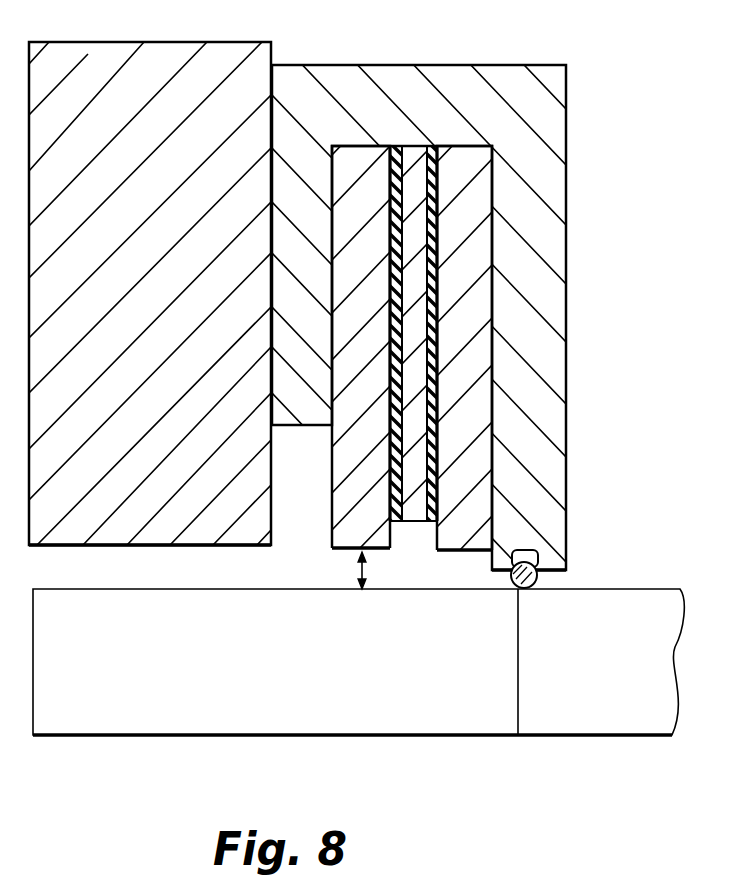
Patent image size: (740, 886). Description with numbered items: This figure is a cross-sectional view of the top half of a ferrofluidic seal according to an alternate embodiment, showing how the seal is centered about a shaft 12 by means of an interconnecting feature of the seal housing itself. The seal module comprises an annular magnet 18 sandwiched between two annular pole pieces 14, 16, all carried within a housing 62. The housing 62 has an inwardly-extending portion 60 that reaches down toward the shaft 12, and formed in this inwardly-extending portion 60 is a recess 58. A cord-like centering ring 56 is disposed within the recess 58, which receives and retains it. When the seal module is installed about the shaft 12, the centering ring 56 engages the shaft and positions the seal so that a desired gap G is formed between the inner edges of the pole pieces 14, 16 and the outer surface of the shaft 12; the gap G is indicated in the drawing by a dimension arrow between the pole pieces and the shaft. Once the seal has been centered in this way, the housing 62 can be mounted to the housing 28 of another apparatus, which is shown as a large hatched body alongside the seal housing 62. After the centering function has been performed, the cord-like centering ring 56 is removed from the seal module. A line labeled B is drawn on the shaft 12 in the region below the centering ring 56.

The shaft 12 is at (578, 725).
The annular pole piece 14 is at (478, 268).
The annular pole piece 16 is at (380, 268).
The annular magnet 18 is at (430, 322).
The housing of another apparatus 28 is at (103, 53).
The cord-like centering ring 56 is at (538, 580).
The recess 58 is at (532, 548).
The inwardly-extending portion 60 is at (557, 478).
The housing 62 is at (557, 115).
The gap G is at (352, 570).
The boundary line B is at (517, 654).